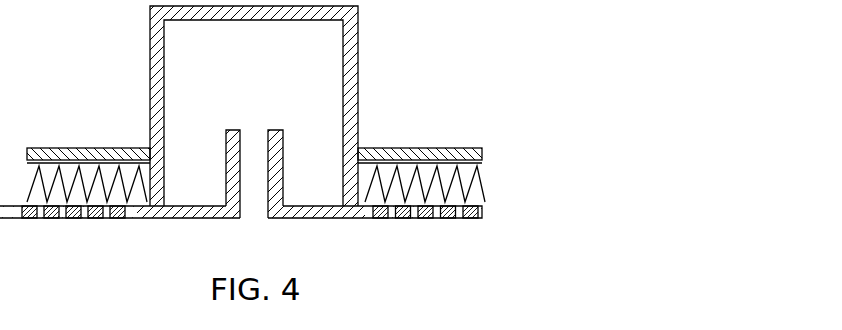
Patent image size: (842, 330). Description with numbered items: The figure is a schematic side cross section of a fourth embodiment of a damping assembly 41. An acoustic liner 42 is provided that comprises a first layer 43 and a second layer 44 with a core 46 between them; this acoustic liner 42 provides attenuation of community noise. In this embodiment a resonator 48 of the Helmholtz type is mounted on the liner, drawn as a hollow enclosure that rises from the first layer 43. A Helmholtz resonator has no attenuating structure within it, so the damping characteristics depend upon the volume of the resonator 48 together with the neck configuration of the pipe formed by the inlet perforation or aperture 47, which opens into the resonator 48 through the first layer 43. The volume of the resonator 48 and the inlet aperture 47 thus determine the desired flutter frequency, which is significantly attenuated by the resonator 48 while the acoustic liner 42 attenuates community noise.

The assembly 41 is at (455, 79).
The acoustic liner 42 is at (286, 184).
The first layer 43 is at (341, 218).
The second layer 44 is at (428, 150).
The core 46 is at (65, 193).
The inlet aperture 47 is at (240, 172).
The resonator 48 is at (353, 30).